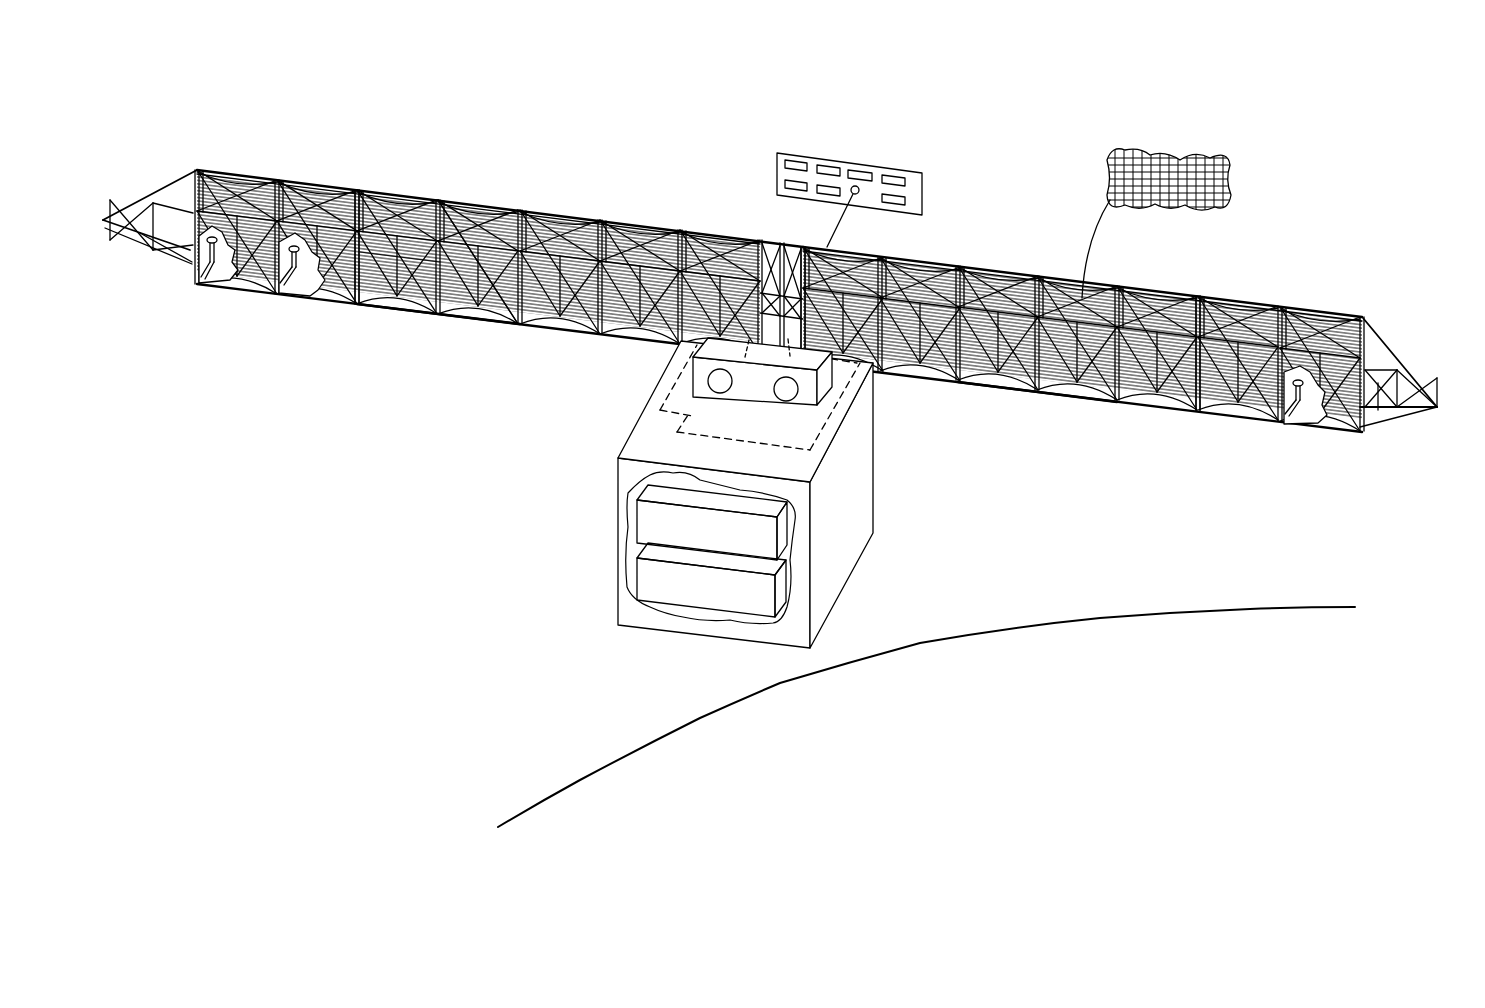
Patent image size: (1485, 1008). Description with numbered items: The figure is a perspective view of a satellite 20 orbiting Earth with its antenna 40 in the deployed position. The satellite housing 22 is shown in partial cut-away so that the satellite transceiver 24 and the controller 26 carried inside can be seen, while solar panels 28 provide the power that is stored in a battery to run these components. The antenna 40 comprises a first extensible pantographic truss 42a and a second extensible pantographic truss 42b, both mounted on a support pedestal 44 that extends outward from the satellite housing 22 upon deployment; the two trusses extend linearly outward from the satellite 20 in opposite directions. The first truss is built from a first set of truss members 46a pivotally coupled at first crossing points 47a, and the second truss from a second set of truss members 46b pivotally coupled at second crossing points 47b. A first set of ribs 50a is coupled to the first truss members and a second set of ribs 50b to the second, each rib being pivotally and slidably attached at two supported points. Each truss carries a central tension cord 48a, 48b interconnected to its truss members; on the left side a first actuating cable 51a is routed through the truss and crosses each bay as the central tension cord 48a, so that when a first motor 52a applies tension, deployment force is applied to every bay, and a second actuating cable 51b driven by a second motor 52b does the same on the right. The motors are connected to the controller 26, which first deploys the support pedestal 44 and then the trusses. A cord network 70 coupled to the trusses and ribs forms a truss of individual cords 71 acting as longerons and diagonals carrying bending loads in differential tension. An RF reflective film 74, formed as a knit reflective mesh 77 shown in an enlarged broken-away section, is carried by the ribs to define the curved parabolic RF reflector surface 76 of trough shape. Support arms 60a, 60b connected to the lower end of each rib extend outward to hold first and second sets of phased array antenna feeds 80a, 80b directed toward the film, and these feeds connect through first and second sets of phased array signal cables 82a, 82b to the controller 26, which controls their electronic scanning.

The satellite 20 is at (742, 103).
The satellite housing 22 is at (851, 463).
The satellite transceiver 24 is at (755, 597).
The controller 26 is at (768, 547).
The solar panels 28 is at (888, 165).
The antenna 40 is at (445, 172).
The first extensible pantographic truss 42a is at (167, 205).
The second extensible pantographic truss 42b is at (1378, 367).
The support pedestal 44 is at (693, 362).
The first set of truss members 46a is at (137, 210).
The second set of truss members 46b is at (1422, 412).
The first crossing points 47a is at (137, 203).
The second crossing points 47b is at (1411, 400).
The central tension cord 48a is at (422, 235).
The central tension cord 48b is at (1243, 337).
The first set of ribs 50a is at (354, 298).
The second set of ribs 50b is at (1196, 418).
The first actuating cable 51a is at (748, 338).
The second actuating cable 51b is at (790, 338).
The first motor 52a is at (708, 381).
The second motor 52b is at (797, 393).
The support arm 60a is at (264, 277).
The support arm 60b is at (1363, 440).
The cord network 70 is at (230, 167).
The individual cords 71 is at (290, 178).
The RF reflective film 74 is at (375, 280).
The RF reflector surface 76 is at (450, 290).
The reflective mesh 77 is at (1195, 150).
The first set of phased array antenna feeds 80a is at (296, 262).
The second set of phased array antenna feeds 80b is at (1283, 413).
The first set of phased array signal cables 82a is at (418, 318).
The second set of phased array signal cables 82b is at (1063, 397).